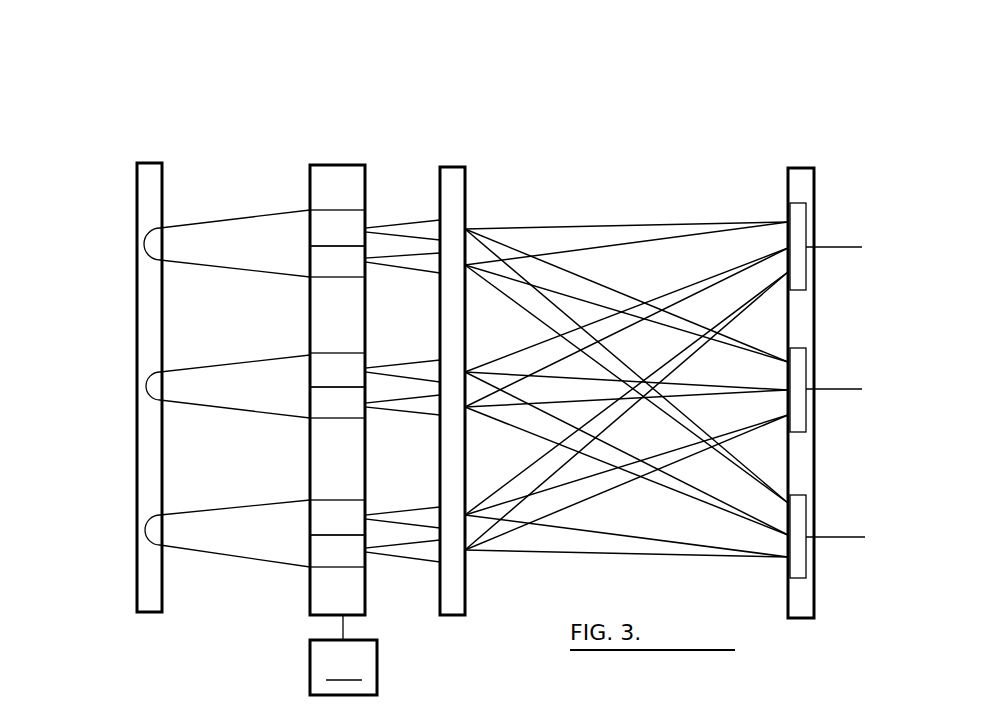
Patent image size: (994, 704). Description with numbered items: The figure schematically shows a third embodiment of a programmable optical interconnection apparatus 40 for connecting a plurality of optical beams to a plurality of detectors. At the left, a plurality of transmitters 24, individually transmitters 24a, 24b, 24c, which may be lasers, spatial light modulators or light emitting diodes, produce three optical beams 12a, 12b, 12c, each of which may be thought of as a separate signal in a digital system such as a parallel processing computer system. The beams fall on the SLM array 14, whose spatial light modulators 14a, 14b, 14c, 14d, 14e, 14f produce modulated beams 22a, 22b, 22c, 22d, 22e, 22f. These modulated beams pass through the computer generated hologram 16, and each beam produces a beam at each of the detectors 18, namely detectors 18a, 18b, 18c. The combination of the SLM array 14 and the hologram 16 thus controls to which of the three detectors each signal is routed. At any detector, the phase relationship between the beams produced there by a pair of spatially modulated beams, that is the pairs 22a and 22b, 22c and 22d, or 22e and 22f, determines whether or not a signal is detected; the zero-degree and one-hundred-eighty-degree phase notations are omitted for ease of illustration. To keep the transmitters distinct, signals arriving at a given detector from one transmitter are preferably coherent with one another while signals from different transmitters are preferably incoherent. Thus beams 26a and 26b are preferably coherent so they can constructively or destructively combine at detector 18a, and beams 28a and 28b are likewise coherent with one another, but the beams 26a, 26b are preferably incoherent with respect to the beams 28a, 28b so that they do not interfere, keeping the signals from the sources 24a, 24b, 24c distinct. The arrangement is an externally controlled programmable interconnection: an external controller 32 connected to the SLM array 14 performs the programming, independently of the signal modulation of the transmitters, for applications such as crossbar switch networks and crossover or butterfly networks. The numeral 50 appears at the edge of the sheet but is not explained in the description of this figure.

The optical beam 12a is at (235, 208).
The optical beam 12b is at (235, 362).
The optical beam 12c is at (235, 507).
The SLM array 14 is at (356, 364).
The spatial light modulator 14a is at (337, 228).
The spatial light modulator 14b is at (337, 261).
The spatial light modulator 14c is at (337, 370).
The spatial light modulator 14d is at (337, 402).
The spatial light modulator 14e is at (337, 517).
The spatial light modulator 14f is at (337, 551).
The computer generated hologram 16 is at (470, 364).
The detectors 18 is at (812, 106).
The detector 18a is at (837, 235).
The detector 18b is at (837, 376).
The detector 18c is at (836, 526).
The modulated beam 22a is at (402, 205).
The modulated beam 22b is at (402, 284).
The modulated beam 22c is at (402, 349).
The modulated beam 22d is at (402, 424).
The modulated beam 22e is at (402, 495).
The modulated beam 22f is at (402, 571).
The transmitters 24 is at (118, 419).
The transmitter 24a is at (100, 216).
The transmitter 24b is at (100, 357).
The transmitter 24c is at (100, 508).
The beam 26a is at (626, 187).
The beam 26b is at (626, 168).
The beam 28a is at (626, 222).
The beam 28b is at (626, 277).
The external controller 32 is at (343, 667).
The optical interconnect system 40 is at (788, 95).
The reference numeral 50 is at (857, 696).